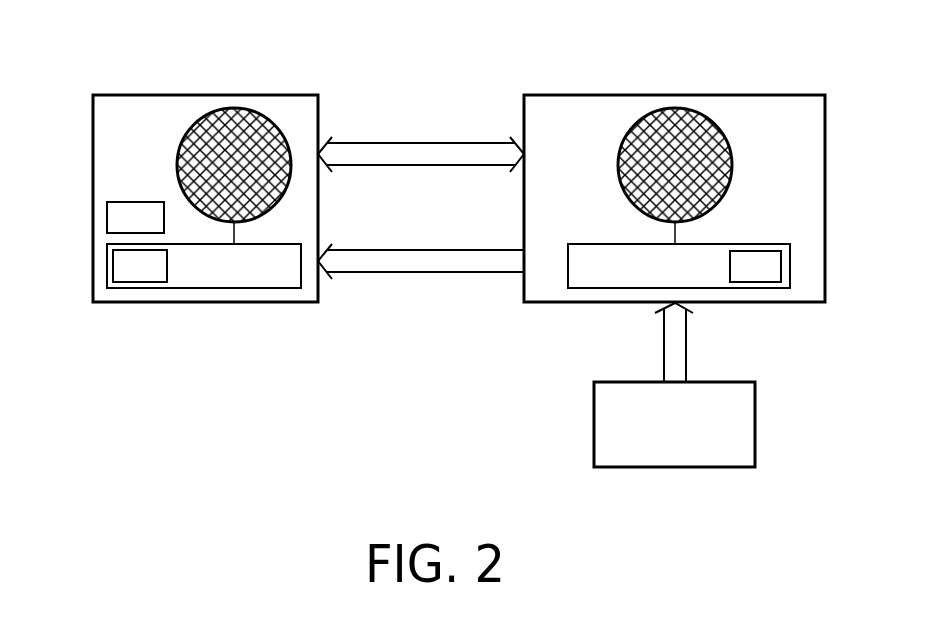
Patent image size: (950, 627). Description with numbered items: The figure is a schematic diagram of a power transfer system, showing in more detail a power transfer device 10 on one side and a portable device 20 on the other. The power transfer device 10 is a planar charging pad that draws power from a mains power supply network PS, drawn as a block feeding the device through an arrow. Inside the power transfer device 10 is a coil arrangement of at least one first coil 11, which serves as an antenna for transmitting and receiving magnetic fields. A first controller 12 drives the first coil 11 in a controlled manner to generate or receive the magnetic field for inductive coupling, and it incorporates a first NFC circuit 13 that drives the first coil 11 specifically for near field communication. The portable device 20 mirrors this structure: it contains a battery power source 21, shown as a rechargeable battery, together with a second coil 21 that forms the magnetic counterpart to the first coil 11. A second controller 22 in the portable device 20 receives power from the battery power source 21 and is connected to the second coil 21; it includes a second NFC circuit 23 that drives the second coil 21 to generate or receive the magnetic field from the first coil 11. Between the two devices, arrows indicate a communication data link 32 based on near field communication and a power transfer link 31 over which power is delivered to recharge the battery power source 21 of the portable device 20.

The power transfer device 10 is at (577, 93).
The first coil 11 is at (693, 120).
The first controller 12 is at (613, 274).
The first NFC circuit 13 is at (753, 275).
The portable device 20 is at (137, 93).
The battery power source / second coil 21 is at (252, 122).
The second controller 22 is at (273, 275).
The second NFC circuit 23 is at (143, 275).
The power transfer link 31 is at (422, 273).
The communication data link 32 is at (403, 142).
The mains power supply network PS is at (743, 439).